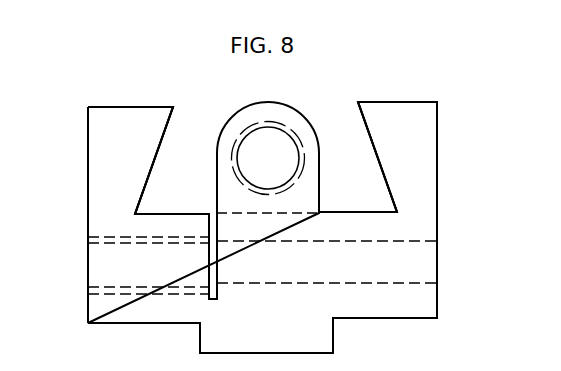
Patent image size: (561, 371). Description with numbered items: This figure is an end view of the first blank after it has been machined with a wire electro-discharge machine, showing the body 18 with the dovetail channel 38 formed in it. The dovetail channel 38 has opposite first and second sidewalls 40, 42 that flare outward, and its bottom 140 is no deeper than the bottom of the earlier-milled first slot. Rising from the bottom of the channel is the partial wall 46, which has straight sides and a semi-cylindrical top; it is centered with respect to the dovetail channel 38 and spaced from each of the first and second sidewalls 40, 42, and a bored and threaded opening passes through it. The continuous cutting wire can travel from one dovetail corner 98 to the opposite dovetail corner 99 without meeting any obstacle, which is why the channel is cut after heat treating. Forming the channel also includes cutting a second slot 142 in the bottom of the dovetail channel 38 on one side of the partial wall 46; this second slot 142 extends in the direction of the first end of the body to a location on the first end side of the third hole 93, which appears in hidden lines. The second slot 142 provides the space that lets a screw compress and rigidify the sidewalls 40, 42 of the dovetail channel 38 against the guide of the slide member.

The housing body 18 is at (201, 338).
The second sidewall 42 is at (122, 107).
The dovetail corner 99 is at (172, 107).
The first sidewall 40 is at (412, 102).
The dovetail corner 98 is at (358, 102).
The partial wall 46 is at (232, 117).
The dovetail channel 38 is at (367, 132).
The bottom of the dovetail 140 is at (350, 212).
The second slot 142 is at (215, 270).
The third hole 93 is at (420, 282).